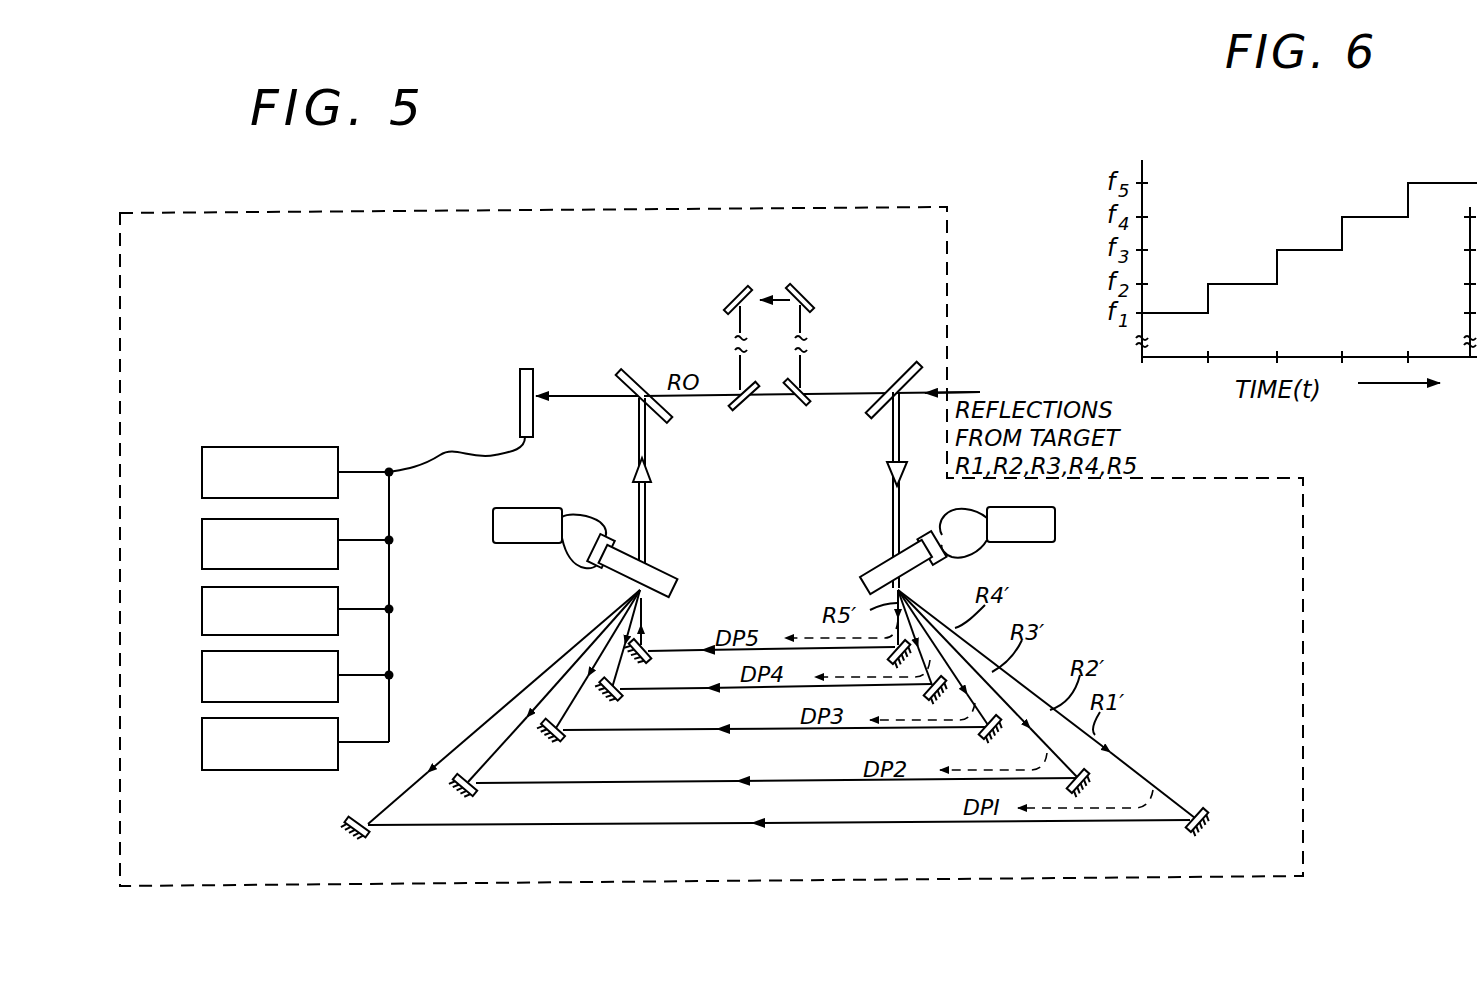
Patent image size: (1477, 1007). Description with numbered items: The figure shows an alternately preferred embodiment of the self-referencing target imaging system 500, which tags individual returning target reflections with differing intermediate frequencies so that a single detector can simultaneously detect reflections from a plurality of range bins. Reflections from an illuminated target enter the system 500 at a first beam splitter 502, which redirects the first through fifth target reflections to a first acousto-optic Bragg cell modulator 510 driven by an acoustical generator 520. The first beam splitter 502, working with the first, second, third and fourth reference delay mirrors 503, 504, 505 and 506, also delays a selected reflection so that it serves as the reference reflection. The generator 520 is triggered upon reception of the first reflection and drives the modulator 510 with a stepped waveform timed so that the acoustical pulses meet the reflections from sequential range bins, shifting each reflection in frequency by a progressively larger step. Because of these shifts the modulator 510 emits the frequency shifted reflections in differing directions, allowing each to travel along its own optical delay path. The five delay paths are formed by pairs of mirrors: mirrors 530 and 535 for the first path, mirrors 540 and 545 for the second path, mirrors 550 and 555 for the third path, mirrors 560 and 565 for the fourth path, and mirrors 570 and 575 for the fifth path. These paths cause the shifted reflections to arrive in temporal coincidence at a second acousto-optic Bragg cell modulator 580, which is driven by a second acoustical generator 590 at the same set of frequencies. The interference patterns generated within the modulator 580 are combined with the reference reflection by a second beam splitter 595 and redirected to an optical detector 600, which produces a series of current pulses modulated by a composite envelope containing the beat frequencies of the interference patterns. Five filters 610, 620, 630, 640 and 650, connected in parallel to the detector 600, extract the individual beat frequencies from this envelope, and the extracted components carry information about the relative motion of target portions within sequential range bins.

The self-referencing target imaging system 500 is at (718, 182).
The first beam splitter 502 is at (908, 370).
The first reference delay mirror 503 is at (805, 402).
The second reference delay mirror 504 is at (808, 292).
The third reference delay mirror 505 is at (740, 292).
The fourth reference delay mirror 506 is at (752, 405).
The first acousto-optic Bragg cell modulator 510 is at (868, 562).
The acoustical generator 520 is at (1055, 525).
The mirror 530 is at (1190, 802).
The mirror 535 is at (370, 836).
The mirror 540 is at (1100, 745).
The mirror 545 is at (478, 794).
The mirror 550 is at (980, 732).
The mirror 555 is at (565, 738).
The mirror 560 is at (933, 690).
The mirror 565 is at (622, 696).
The mirror 570 is at (893, 657).
The mirror 575 is at (648, 659).
The second acousto-optic Bragg cell modulator 580 is at (668, 556).
The second acoustical generator 590 is at (515, 505).
The second beam splitter 595 is at (668, 418).
The optical detector 600 is at (520, 380).
The filter 610 is at (338, 448).
The filter 620 is at (340, 521).
The filter 630 is at (341, 594).
The filter 640 is at (341, 661).
The filter 650 is at (341, 722).